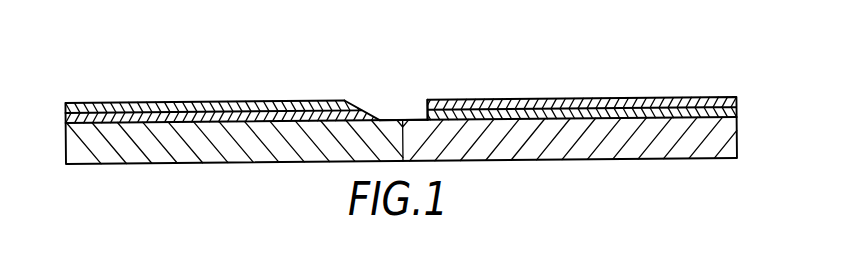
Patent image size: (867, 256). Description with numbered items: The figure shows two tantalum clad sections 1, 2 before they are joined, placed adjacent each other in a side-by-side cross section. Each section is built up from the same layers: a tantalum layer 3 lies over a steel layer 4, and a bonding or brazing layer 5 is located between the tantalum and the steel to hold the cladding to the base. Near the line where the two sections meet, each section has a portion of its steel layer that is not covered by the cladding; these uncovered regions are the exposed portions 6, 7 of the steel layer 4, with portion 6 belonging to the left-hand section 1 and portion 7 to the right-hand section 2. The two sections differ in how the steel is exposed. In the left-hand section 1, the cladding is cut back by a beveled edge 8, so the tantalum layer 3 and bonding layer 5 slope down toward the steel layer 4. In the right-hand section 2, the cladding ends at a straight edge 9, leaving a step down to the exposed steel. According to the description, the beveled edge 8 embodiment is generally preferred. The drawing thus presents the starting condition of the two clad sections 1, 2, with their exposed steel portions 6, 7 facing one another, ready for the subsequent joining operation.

The section 1 is at (193, 79).
The section 2 is at (581, 64).
The tantalum layer 3 is at (91, 94).
The steel layer 4 is at (143, 165).
The bonding or brazing layer 5 is at (67, 120).
The exposed portion of steel layer 6 is at (385, 108).
The exposed portion of steel layer 7 is at (409, 108).
The beveled edge 8 is at (362, 98).
The straight edge 9 is at (433, 89).